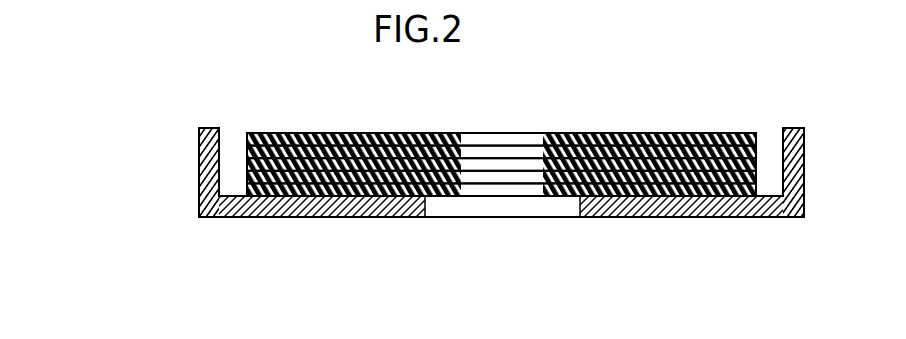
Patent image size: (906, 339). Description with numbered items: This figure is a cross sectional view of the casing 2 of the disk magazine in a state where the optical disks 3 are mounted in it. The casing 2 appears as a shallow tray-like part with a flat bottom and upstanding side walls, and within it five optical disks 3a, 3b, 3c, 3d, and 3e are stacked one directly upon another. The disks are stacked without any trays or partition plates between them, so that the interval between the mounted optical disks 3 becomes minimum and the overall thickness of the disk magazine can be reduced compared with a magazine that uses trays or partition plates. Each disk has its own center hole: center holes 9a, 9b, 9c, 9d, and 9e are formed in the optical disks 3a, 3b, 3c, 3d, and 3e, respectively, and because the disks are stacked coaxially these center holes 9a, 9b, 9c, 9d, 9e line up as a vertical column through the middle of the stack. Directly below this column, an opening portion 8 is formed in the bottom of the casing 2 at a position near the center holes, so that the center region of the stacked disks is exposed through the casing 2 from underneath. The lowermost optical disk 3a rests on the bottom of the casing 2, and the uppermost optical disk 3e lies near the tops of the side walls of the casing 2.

The casing 2 is at (745, 207).
The optical disks 3 is at (56, 118).
The optical disk 3a is at (205, 207).
The optical disk 3b is at (247, 178).
The optical disk 3c is at (247, 166).
The optical disk 3d is at (247, 153).
The optical disk 3e is at (247, 141).
The opening portion 8 is at (447, 205).
The center hole 9a is at (482, 188).
The center hole 9b is at (503, 175).
The center hole 9c is at (538, 163).
The center hole 9d is at (530, 150).
The center hole 9e is at (490, 141).